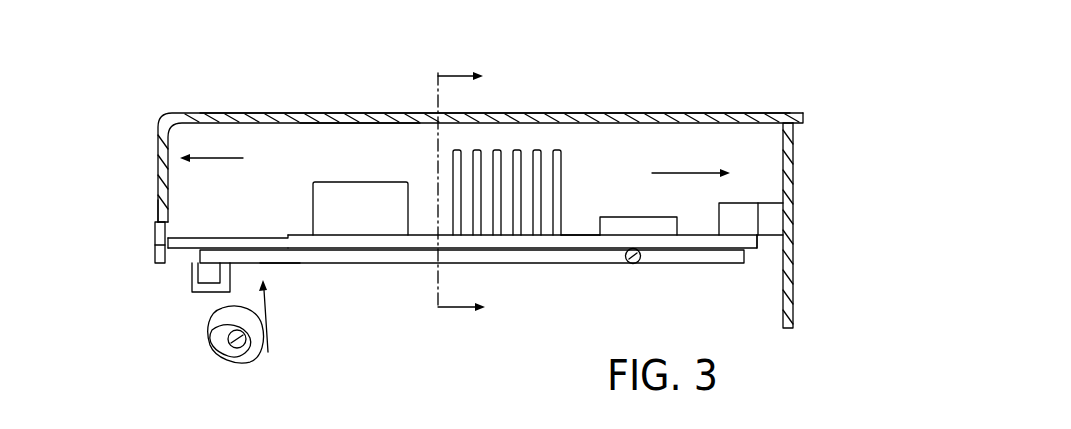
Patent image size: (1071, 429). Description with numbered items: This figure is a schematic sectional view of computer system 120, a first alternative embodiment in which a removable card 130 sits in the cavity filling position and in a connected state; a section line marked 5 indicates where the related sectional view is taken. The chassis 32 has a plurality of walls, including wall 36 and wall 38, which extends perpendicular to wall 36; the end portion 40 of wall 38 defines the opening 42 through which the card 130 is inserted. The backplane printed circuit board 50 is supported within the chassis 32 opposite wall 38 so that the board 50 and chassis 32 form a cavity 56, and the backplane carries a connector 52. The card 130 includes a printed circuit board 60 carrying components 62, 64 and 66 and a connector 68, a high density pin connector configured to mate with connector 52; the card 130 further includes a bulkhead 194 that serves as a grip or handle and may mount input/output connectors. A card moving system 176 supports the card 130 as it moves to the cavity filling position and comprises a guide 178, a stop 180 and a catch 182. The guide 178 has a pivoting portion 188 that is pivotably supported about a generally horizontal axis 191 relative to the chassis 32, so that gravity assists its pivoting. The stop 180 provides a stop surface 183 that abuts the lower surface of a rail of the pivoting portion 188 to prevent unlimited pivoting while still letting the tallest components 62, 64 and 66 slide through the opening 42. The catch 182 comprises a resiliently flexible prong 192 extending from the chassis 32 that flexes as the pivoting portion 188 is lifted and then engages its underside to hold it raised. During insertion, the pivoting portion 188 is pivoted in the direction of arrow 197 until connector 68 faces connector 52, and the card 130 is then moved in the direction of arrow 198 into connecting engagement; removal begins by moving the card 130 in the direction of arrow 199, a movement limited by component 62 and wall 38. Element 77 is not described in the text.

The computer system 120 is at (676, 60).
The chassis 32 is at (272, 107).
The wall 36 is at (545, 113).
The cavity 56 is at (352, 140).
The wall 38 is at (160, 192).
The end portion 40 is at (157, 218).
The opening 42 is at (155, 235).
The printed circuit board 50 is at (793, 285).
The connector 52 is at (773, 237).
The printed circuit board 60 is at (577, 234).
The component 62 is at (362, 181).
The component 64 is at (563, 172).
The component 66 is at (642, 217).
The connector 68 is at (750, 203).
The cable 77 is at (220, 347).
The removable card 130 is at (289, 229).
The card moving system 176 is at (382, 273).
The guide 178 is at (524, 274).
The stop 180 is at (248, 366).
The catch 182 is at (193, 275).
The stop surface 183 is at (212, 330).
The pivoting portion 188 is at (280, 265).
The axis 191 is at (637, 264).
The prong 192 is at (208, 283).
The bulkhead 194 is at (156, 251).
The arrow 197 is at (276, 350).
The arrow 198 is at (685, 173).
The arrow 199 is at (218, 158).
The section line 5- 5 is at (460, 191).